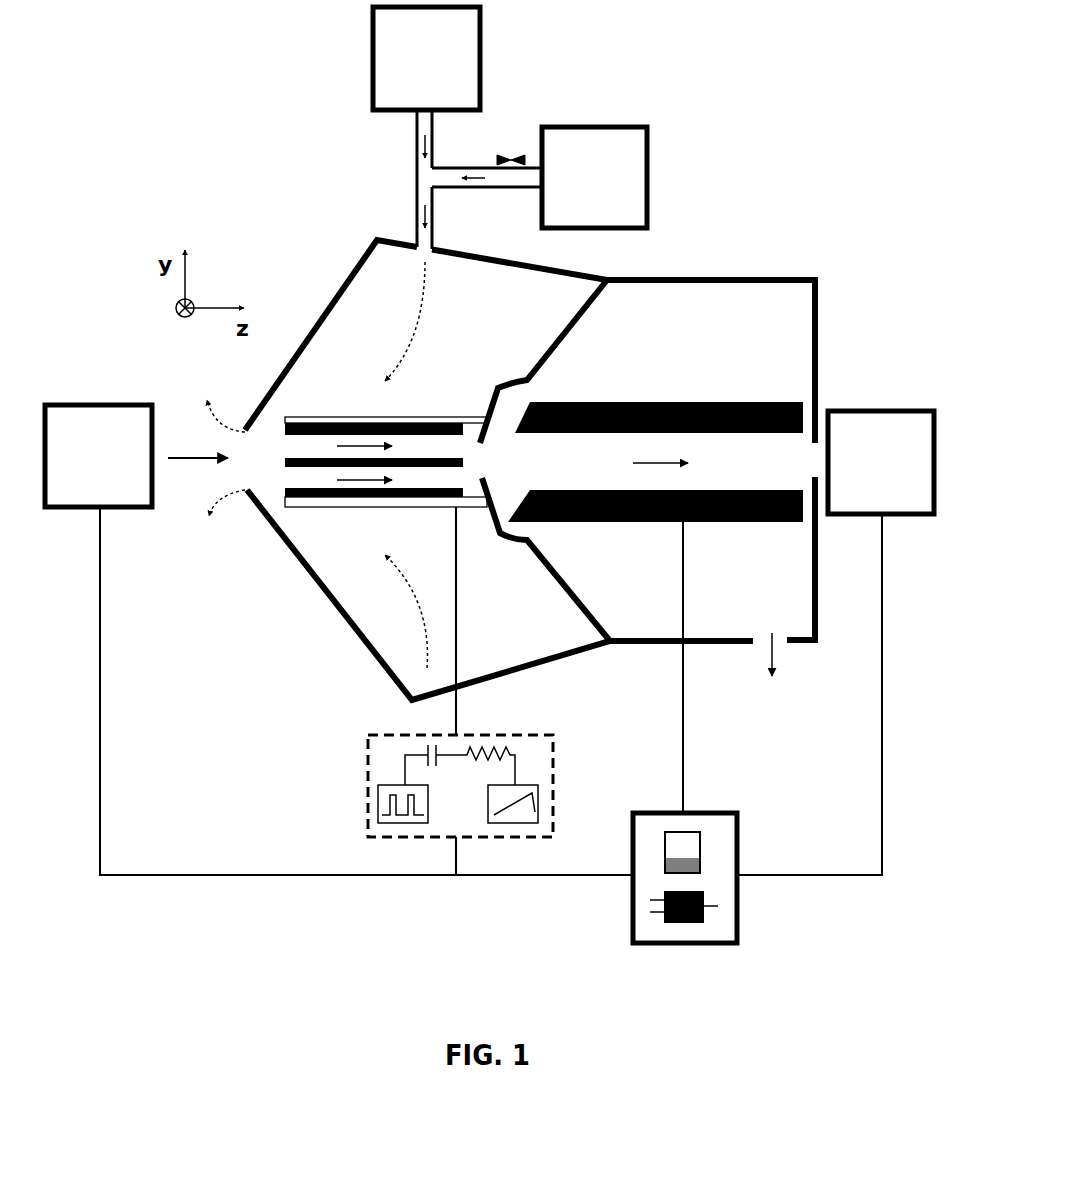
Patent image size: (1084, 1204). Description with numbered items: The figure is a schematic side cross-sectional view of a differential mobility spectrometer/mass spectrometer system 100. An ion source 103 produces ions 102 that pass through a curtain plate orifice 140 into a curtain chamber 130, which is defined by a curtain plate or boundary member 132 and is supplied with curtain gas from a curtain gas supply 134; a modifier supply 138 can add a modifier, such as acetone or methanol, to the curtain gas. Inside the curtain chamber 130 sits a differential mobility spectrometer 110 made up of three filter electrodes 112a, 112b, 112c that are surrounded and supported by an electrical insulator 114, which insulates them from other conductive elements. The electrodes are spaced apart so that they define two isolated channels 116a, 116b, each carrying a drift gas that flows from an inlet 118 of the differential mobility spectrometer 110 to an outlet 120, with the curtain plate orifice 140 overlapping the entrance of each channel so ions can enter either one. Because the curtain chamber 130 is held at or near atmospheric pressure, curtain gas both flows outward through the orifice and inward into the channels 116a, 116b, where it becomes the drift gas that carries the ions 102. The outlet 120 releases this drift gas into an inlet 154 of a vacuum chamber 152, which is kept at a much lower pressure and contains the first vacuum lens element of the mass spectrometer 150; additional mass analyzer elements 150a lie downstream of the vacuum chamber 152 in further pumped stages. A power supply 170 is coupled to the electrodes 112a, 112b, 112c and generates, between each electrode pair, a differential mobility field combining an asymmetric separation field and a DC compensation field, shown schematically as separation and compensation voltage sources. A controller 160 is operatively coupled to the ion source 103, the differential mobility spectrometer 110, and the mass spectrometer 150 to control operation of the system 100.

The differential mobility spectrometer/mass spectrometer system 100 is at (211, 116).
The ions 102 is at (248, 453).
The ion source 103 is at (98, 456).
The differential mobility spectrometer 110 is at (302, 427).
The filter electrode 112a is at (303, 427).
The filter electrode 112b is at (332, 465).
The filter electrode 112c is at (312, 490).
The electrical insulator 114 is at (368, 505).
The channel 116a is at (413, 443).
The channel 116b is at (432, 480).
The inlet 118 is at (270, 463).
The outlet 120 is at (470, 468).
The curtain chamber 130 is at (575, 644).
The curtain plate 132 is at (356, 407).
The curtain gas supply 134 is at (175, 456).
The modifier supply 138 is at (426, 128).
The curtain plate orifice 140 is at (272, 459).
The mass spectrometer 150 is at (757, 402).
The mass analyzer element 150a is at (881, 462).
The vacuum chamber 152 is at (665, 626).
The inlet of vacuum chamber 154 is at (495, 443).
The controller 160 is at (627, 917).
The power supply 170 is at (388, 835).